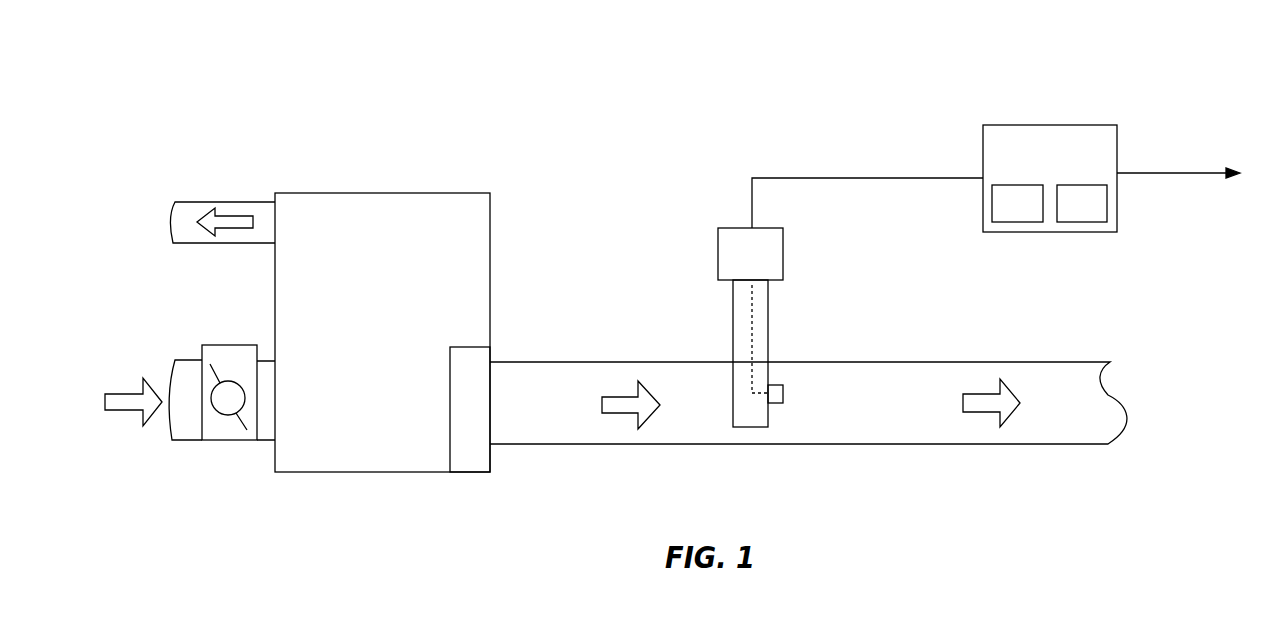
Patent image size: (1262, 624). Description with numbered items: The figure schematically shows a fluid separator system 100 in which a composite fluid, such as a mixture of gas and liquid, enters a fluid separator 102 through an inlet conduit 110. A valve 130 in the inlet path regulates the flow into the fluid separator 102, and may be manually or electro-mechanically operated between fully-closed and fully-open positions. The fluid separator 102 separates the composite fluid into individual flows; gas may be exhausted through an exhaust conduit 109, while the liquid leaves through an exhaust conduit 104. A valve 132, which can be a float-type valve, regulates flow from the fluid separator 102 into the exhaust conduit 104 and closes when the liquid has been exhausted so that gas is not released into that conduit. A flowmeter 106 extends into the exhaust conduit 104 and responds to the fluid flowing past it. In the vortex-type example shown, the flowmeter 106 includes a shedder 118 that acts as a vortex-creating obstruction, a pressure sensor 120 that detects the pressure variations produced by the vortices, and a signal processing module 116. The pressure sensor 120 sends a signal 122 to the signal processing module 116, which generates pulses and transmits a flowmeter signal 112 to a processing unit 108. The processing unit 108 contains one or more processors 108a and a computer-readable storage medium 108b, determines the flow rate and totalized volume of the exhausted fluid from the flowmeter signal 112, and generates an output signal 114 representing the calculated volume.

The fluid separator system 100 is at (303, 86).
The fluid separator 102 is at (380, 193).
The exhaust conduit 104 is at (547, 362).
The flowmeter 106 is at (694, 187).
The processing unit 108 is at (1023, 125).
The processors 108a is at (1015, 222).
The computer-readable storage medium 108b is at (1095, 222).
The exhaust conduit 109 is at (210, 202).
The inlet conduit 110 is at (185, 360).
The flowmeter signal 112 is at (817, 178).
The output signal 114 is at (1130, 173).
The signal processing module 116 is at (787, 267).
The shedder 118 is at (768, 337).
The pressure sensor 120 is at (783, 390).
The signal 122 is at (752, 312).
The valve 130 is at (228, 345).
The valve 132 is at (470, 347).